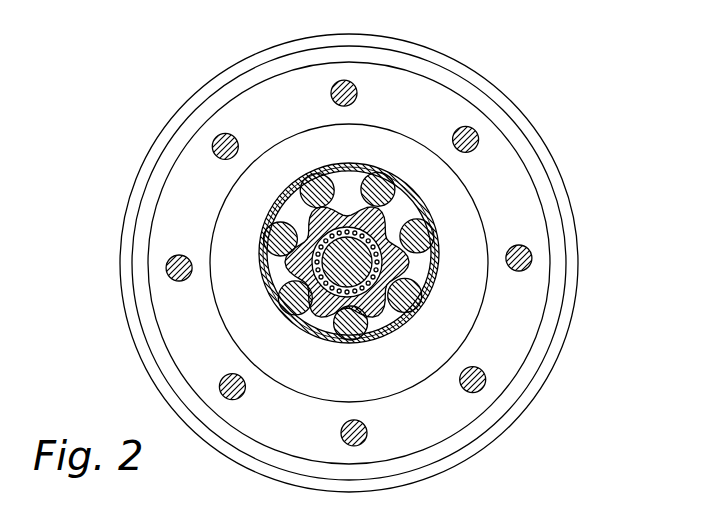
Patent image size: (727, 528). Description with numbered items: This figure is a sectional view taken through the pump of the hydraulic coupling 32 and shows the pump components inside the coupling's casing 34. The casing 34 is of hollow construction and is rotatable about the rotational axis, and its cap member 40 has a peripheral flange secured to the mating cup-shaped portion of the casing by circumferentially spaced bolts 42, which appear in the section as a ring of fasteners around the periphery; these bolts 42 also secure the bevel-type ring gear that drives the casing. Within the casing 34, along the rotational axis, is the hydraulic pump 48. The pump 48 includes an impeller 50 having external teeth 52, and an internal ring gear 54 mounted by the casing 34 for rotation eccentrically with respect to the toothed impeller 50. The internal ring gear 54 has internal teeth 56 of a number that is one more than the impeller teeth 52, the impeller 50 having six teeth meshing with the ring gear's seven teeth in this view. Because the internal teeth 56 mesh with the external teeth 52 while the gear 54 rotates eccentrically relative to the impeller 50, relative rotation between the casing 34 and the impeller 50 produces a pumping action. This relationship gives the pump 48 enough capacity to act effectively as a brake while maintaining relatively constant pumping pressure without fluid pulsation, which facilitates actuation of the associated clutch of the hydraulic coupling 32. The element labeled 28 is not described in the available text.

The shaft 28 is at (405, 317).
The hydraulic coupling 32 is at (130, 130).
The casing 34 is at (520, 110).
The cap member 40 is at (516, 172).
The bolts 42 is at (216, 136).
The hydraulic pump 48 is at (446, 220).
The impeller 50 is at (295, 199).
The external teeth 52 is at (313, 183).
The internal ring gear 54 is at (447, 260).
The internal teeth 56 is at (294, 180).